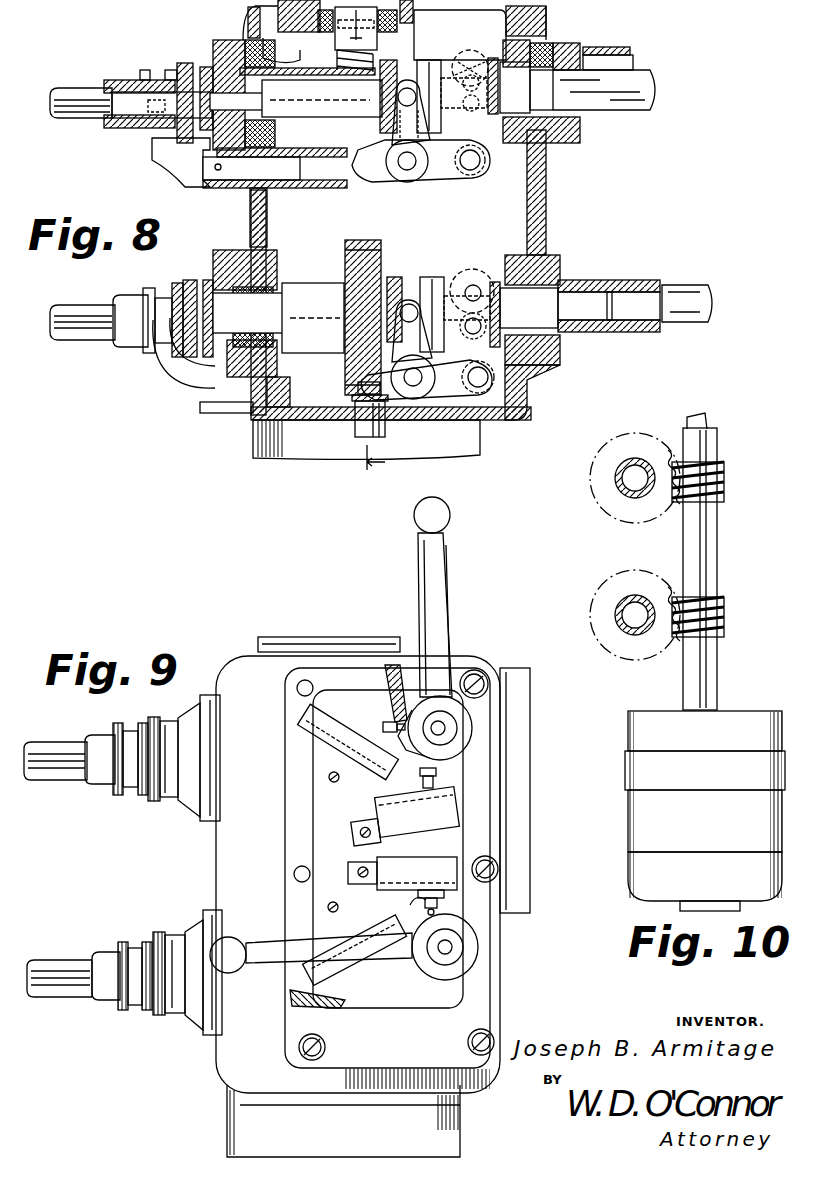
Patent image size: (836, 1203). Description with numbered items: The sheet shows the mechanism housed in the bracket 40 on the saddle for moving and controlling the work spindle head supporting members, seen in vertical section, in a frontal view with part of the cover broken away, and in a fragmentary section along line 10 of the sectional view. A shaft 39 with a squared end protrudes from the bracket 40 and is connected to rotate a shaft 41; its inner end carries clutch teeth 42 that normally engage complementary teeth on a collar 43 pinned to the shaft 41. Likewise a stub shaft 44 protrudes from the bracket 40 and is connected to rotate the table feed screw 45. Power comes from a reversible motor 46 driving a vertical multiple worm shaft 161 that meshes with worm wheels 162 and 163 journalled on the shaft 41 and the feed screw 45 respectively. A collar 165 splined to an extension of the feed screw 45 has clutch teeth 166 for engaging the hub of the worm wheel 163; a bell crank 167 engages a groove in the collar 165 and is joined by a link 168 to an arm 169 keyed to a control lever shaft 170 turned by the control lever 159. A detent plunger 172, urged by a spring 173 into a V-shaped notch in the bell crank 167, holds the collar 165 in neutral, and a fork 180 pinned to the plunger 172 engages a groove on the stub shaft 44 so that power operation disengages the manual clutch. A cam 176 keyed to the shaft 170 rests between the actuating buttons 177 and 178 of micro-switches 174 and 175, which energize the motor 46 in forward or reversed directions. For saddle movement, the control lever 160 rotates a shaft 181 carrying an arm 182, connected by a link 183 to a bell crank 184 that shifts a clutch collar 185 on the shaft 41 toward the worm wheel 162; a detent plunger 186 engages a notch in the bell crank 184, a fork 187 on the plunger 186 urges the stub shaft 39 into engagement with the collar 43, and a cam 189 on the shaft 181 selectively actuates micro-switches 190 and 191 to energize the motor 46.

In FIG. 8, the section line 10— 10 is at (400, 254).
In FIG. 8, the shaft 39 is at (126, 345).
In FIG. 9, the shaft 39 is at (100, 955).
In FIG. 8, the bracket 40 is at (522, 418).
In FIG. 9, the bracket 40 is at (236, 662).
In FIG. 8, the shaft 41 is at (582, 292).
In FIG. 8, the clutch teeth 42 is at (193, 282).
In FIG. 8, the collar 43 is at (207, 68).
In FIG. 8, the shaft 44 is at (95, 120).
In FIG. 9, the shaft 44 is at (104, 788).
In FIG. 8, the feed screw 45 is at (642, 99).
In FIG. 8, the motor 46 is at (302, 458).
In FIG. 9, the motor 46 is at (228, 1124).
In FIG. 10, the motor 46 is at (640, 733).
In FIG. 9, the control lever 159 is at (447, 522).
In FIG. 9, the control lever 160 is at (240, 970).
In FIG. 8, the multiple worm shaft 161 is at (354, 410).
In FIG. 10, the multiple worm shaft 161 is at (700, 546).
In FIG. 8, the worm wheel 162 is at (350, 256).
In FIG. 10, the worm wheel 162 is at (616, 583).
In FIG. 8, the worm wheel 163 is at (336, 44).
In FIG. 10, the worm wheel 163 is at (612, 508).
In FIG. 8, the collar 165 is at (440, 62).
In FIG. 8, the clutch teeth 166 is at (398, 124).
In FIG. 8, the bell crank 167 is at (450, 172).
In FIG. 8, the link 168 is at (481, 166).
In FIG. 8, the arm 169 is at (475, 62).
In FIG. 8, the control lever shaft 170 is at (480, 76).
In FIG. 9, the control lever shaft 170 is at (455, 745).
In FIG. 8, the detent plunger 172 is at (337, 188).
In FIG. 8, the spring 173 is at (273, 200).
In FIG. 9, the micro-switch 174 is at (368, 774).
In FIG. 9, the micro-switch 175 is at (438, 810).
In FIG. 9, the cam 176 is at (412, 752).
In FIG. 9, the switch actuating button 177 is at (390, 740).
In FIG. 9, the switch actuating button 178 is at (419, 773).
In FIG. 8, the fork 180 is at (180, 160).
In FIG. 8, the shaft 181 is at (458, 290).
In FIG. 9, the shaft 181 is at (446, 960).
In FIG. 8, the arm 182 is at (494, 262).
In FIG. 8, the link 183 is at (482, 388).
In FIG. 8, the bell crank 184 is at (432, 396).
In FIG. 8, the clutch collar 185 is at (431, 277).
In FIG. 8, the detent plunger 186 is at (356, 386).
In FIG. 8, the fork 187 is at (202, 416).
In FIG. 9, the cam 189 is at (410, 915).
In FIG. 9, the micro-switch 190 is at (420, 857).
In FIG. 9, the micro-switch 191 is at (362, 976).